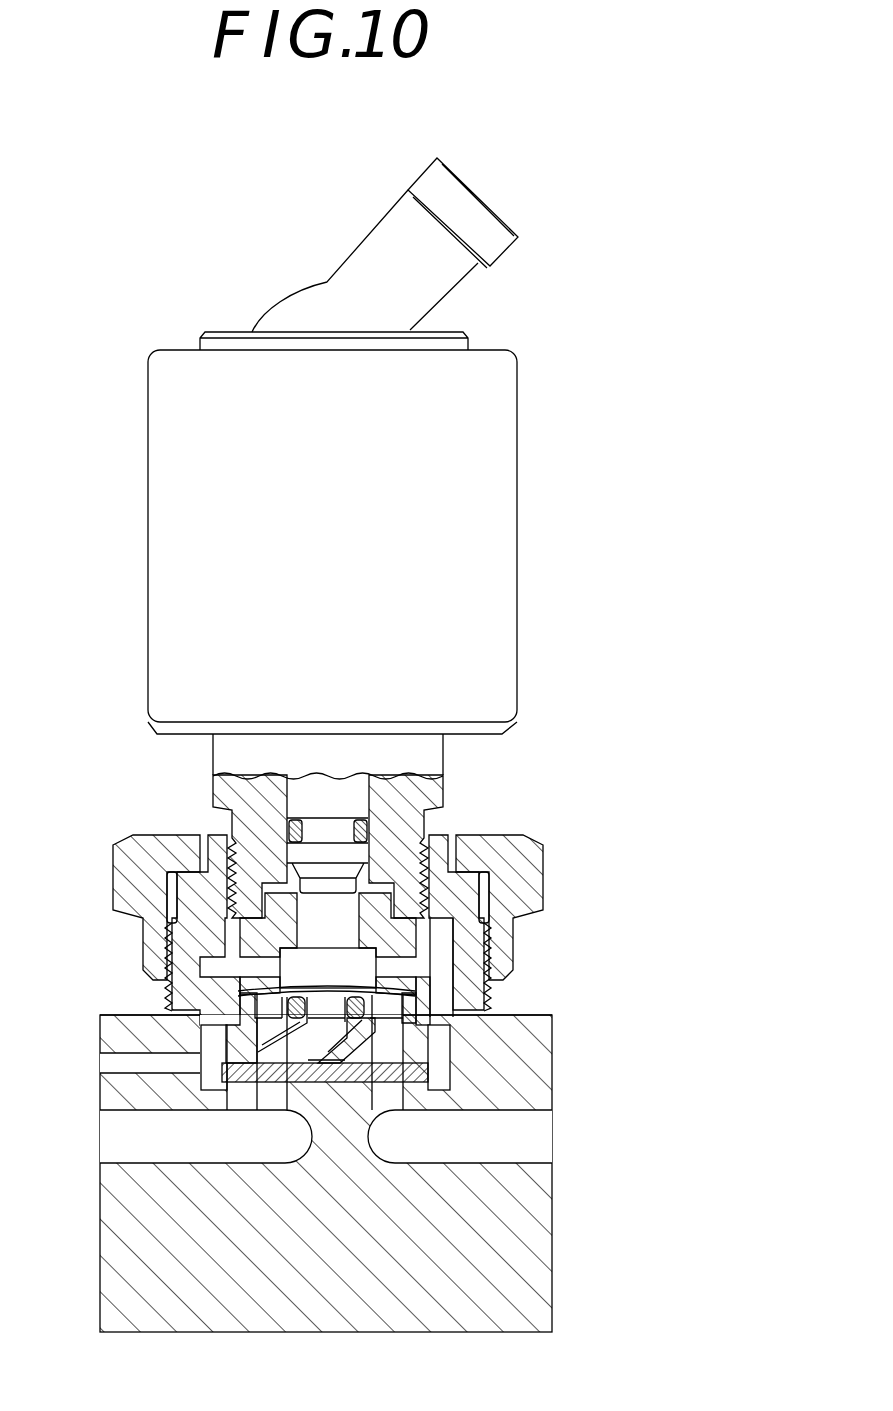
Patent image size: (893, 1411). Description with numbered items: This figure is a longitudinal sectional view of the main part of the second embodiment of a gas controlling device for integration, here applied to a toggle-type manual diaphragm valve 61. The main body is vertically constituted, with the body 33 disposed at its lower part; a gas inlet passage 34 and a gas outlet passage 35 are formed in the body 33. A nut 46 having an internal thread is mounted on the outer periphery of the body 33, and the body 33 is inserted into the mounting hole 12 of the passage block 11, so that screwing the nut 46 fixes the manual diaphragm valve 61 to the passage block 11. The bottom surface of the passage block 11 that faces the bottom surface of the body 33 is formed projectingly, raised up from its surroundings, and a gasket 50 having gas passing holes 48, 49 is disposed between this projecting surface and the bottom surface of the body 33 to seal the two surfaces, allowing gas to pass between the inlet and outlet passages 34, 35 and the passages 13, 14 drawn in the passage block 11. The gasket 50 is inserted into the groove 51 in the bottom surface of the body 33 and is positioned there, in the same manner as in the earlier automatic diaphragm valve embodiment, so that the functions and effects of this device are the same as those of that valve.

The toggle-type manual diaphragm valve 61 is at (550, 460).
The body 33 is at (448, 831).
The nut 46 is at (123, 853).
The mounting hole 12 is at (452, 965).
The gas outlet passage 35 is at (452, 1040).
The passage block 11 is at (556, 1062).
The passage 13 is at (110, 1127).
The passage 14 is at (535, 1152).
The gasket 50 is at (255, 1068).
The gas passing hole 48 is at (255, 1080).
The gas passing hole 49 is at (390, 1075).
The gas inlet passage 34 is at (292, 1020).
The groove 51 is at (312, 1022).